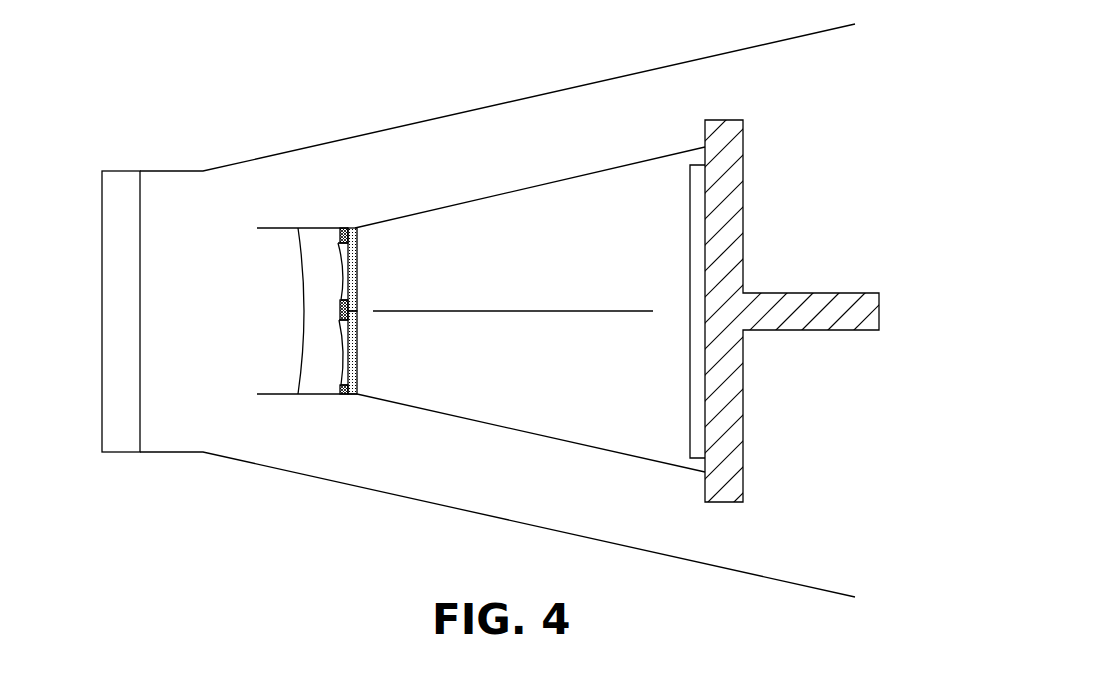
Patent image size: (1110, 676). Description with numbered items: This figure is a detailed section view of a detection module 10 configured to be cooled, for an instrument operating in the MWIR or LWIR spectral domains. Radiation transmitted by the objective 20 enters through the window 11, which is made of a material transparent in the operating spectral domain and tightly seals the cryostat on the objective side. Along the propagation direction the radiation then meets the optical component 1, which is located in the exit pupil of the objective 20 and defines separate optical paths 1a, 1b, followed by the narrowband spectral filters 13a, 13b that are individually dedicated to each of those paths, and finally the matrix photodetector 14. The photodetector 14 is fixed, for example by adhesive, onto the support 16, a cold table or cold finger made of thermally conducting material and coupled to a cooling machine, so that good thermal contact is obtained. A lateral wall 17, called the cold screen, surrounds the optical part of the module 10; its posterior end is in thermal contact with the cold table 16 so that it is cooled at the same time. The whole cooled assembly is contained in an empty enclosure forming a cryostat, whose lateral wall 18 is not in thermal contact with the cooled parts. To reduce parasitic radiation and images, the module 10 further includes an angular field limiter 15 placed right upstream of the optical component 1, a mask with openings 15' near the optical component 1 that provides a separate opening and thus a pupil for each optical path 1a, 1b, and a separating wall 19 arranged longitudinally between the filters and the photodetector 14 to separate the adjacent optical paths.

The optical component 1 is at (312, 289).
The optical path 1a is at (521, 256).
The optical path 1b is at (521, 371).
The detection module 10 is at (188, 487).
The window 11 is at (120, 160).
The narrowband spectral filter 13a is at (356, 265).
The narrowband spectral filter 13b is at (356, 366).
The matrix photodetector 14 is at (695, 217).
The angular field limiter 15 is at (295, 283).
The mask with openings 15' is at (387, 313).
The support 16 is at (736, 181).
The lateral wall 17 is at (603, 173).
The lateral wall of the cryostat 18 is at (435, 503).
The separating wall 19 is at (588, 310).
The objective 20 is at (70, 313).